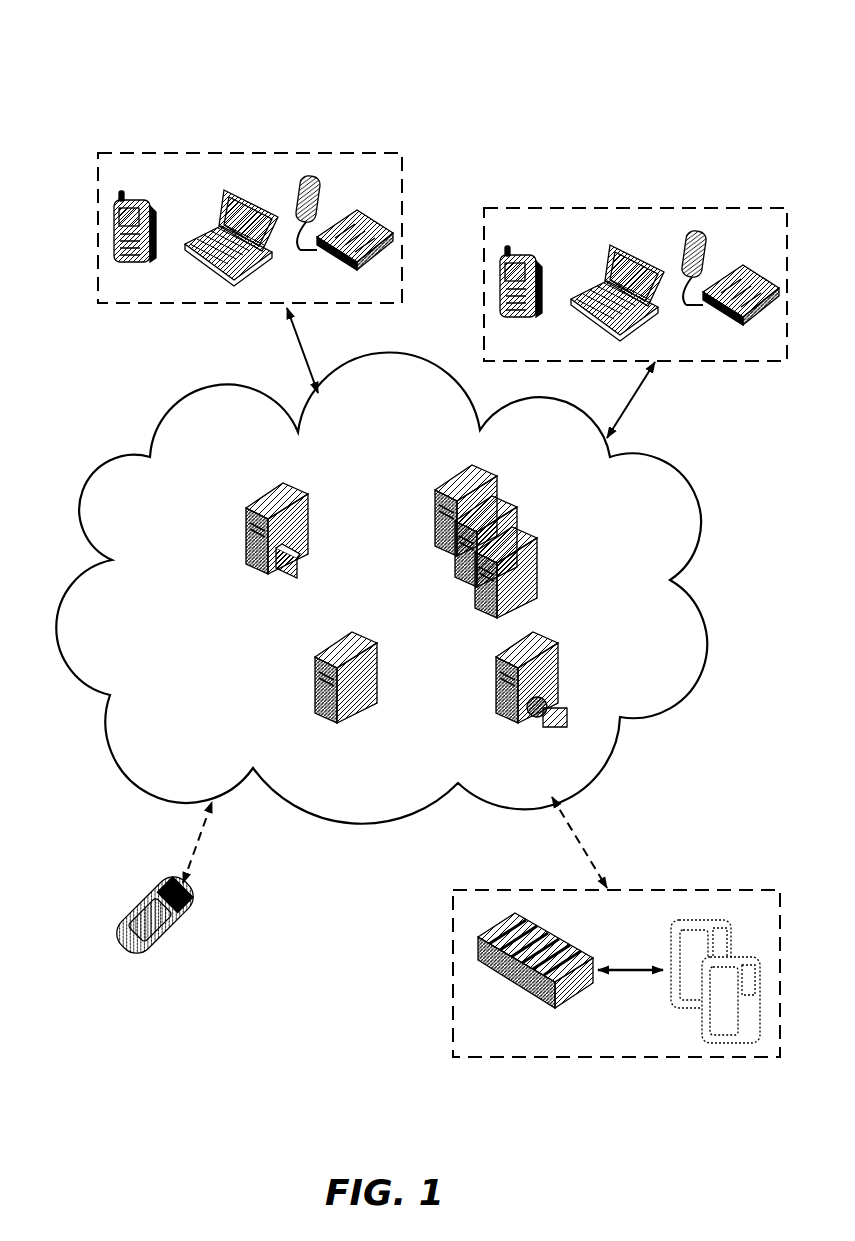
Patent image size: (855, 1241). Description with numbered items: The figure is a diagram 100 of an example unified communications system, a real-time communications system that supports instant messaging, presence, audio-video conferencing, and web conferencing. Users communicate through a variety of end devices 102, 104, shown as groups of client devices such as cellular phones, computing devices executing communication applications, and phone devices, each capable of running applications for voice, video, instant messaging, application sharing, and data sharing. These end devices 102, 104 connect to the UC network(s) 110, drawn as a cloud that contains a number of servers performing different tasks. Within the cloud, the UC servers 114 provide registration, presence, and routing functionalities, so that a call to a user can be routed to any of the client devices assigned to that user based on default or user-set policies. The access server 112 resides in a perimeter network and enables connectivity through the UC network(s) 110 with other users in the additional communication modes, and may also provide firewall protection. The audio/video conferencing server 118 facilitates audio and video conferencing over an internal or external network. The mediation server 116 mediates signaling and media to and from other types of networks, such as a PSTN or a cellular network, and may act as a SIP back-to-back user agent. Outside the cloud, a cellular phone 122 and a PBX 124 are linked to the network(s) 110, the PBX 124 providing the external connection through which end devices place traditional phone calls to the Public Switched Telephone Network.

The diagram of unified communications system 100 is at (655, 57).
The end devices 102 is at (150, 148).
The end devices 104 is at (537, 207).
The UC network(s) 110 is at (180, 397).
The access server 112 is at (275, 478).
The UC servers 114 is at (458, 467).
The mediation server 116 is at (325, 640).
The audio/video conferencing server 118 is at (513, 640).
The cellular phone 122 is at (142, 898).
The PBX 124 is at (478, 880).